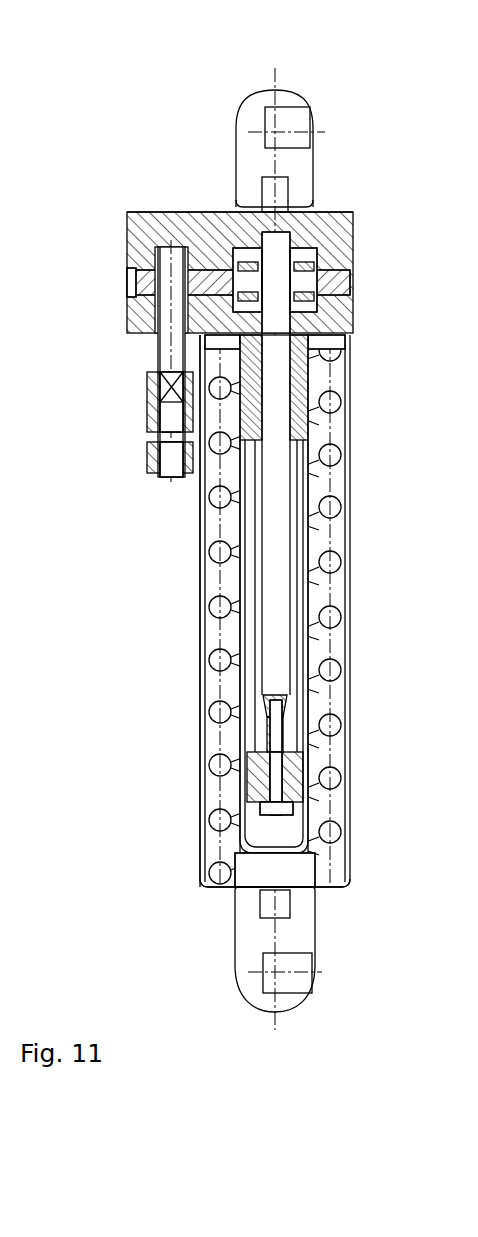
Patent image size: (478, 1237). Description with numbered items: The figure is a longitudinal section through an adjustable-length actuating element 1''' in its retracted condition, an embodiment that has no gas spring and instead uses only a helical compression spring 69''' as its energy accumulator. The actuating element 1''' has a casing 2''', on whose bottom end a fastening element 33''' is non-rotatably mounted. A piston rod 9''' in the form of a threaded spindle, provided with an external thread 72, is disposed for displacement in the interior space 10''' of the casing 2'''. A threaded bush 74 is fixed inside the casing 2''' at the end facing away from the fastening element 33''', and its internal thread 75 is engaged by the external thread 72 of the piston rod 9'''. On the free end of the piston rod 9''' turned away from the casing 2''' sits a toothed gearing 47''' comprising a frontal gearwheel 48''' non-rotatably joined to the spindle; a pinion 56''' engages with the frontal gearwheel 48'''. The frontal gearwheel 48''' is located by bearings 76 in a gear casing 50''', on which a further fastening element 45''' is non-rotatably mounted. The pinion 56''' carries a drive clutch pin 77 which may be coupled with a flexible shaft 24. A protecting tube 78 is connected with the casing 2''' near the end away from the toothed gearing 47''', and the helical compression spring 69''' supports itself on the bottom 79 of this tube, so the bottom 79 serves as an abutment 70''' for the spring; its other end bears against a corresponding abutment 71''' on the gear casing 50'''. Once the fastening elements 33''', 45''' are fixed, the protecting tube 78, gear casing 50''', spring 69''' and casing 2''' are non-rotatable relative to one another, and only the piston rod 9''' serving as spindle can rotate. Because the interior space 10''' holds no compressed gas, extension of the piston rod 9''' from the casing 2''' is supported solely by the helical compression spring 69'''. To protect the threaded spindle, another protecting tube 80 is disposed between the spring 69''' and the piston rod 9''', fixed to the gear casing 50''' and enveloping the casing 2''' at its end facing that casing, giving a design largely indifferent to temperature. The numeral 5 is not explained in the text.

The actuating element 1''' is at (272, 567).
The casing 2''' is at (271, 606).
The inner tube 5 is at (272, 542).
The piston rod 9''' is at (171, 611).
The interior space 10''' is at (363, 523).
The flexible shaft 24 is at (147, 459).
The fastening element 33''' is at (348, 949).
The fastening element 45''' is at (350, 151).
The toothed gearing 47''' is at (186, 203).
The frontal gearwheel 48''' is at (185, 294).
The gear casing 50''' is at (241, 264).
The pinion 56''' is at (78, 277).
The helical compression spring 69''' is at (352, 387).
The abutment 70''' is at (331, 888).
The abutment 71''' is at (333, 339).
The external thread 72 is at (300, 478).
The threaded bush 74 is at (315, 420).
The internal thread 75 is at (262, 512).
The bearings 76 is at (318, 265).
The drive clutch pin 77 is at (136, 361).
The protecting tube 78 is at (352, 612).
The bottom 79 is at (213, 893).
The protecting tube 80 is at (262, 588).